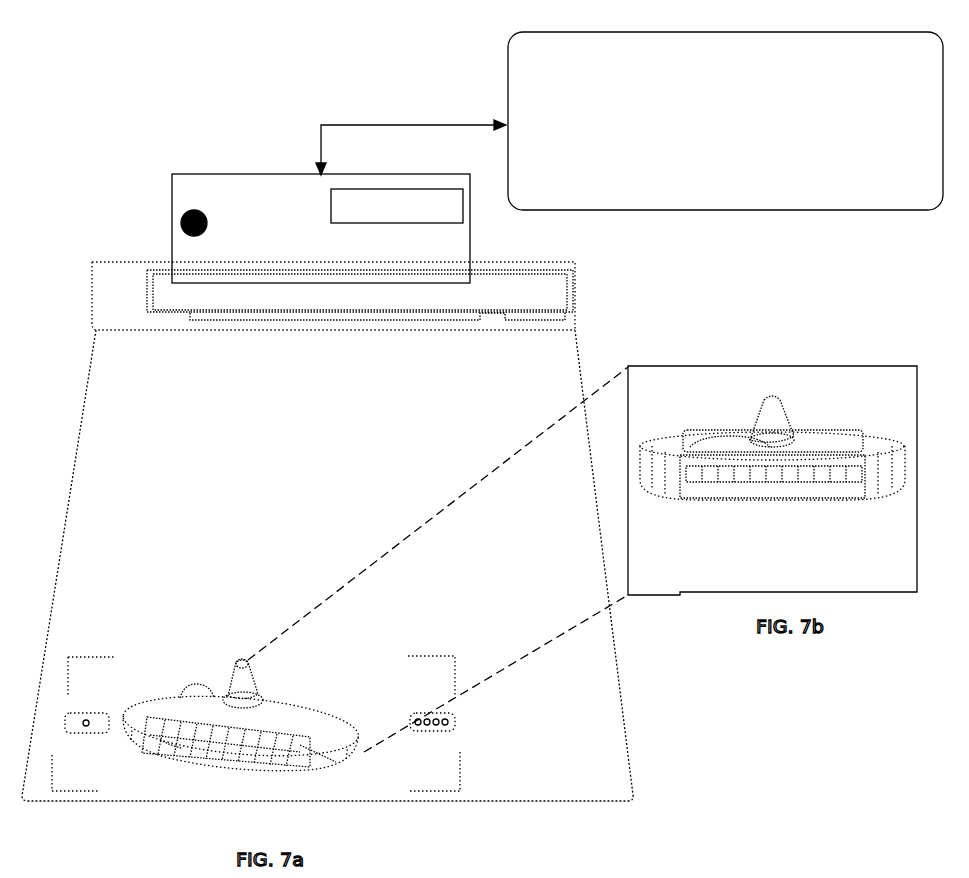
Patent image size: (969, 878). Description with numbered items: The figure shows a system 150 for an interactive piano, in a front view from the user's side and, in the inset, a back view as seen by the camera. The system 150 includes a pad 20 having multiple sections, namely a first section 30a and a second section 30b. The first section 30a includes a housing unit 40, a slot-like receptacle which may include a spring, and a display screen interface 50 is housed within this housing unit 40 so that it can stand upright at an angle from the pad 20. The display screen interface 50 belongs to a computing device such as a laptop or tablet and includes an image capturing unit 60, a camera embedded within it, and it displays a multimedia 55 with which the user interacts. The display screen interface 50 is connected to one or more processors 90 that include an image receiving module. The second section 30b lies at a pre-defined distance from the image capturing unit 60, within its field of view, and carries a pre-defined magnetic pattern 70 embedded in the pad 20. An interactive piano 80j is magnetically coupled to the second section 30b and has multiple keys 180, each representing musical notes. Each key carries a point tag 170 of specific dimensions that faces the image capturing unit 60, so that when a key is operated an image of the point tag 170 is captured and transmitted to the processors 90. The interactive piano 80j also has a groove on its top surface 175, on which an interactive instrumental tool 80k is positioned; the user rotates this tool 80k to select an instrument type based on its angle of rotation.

In FIG. 7a, the system 150 is at (66, 106).
In FIG. 7a, the pad 20 is at (108, 274).
In FIG. 7a, the first section 30a is at (572, 364).
In FIG. 7a, the second section 30b is at (603, 716).
In FIG. 7a, the housing unit 40 is at (556, 281).
In FIG. 7a, the display screen interface 50 is at (317, 172).
In FIG. 7a, the multimedia 55 is at (370, 189).
In FIG. 7a, the image capturing unit 60 is at (192, 204).
In FIG. 7a, the pre-defined magnetic pattern 70 is at (452, 781).
In FIG. 7a, the processors 90 is at (633, 32).
In FIG. 7a, the interactive piano 80j is at (328, 758).
In FIG. 7b, the interactive piano 80j is at (708, 490).
In FIG. 7a, the interactive instrumental tool 80k is at (248, 668).
In FIG. 7a, the point tag 170 is at (212, 696).
In FIG. 7b, the point tag 170 is at (793, 480).
In FIG. 7a, the top surface 175 is at (270, 708).
In FIG. 7b, the top surface 175 is at (800, 440).
In FIG. 7a, the multiple keys 180 is at (182, 744).
In FIG. 7b, the multiple keys 180 is at (712, 434).